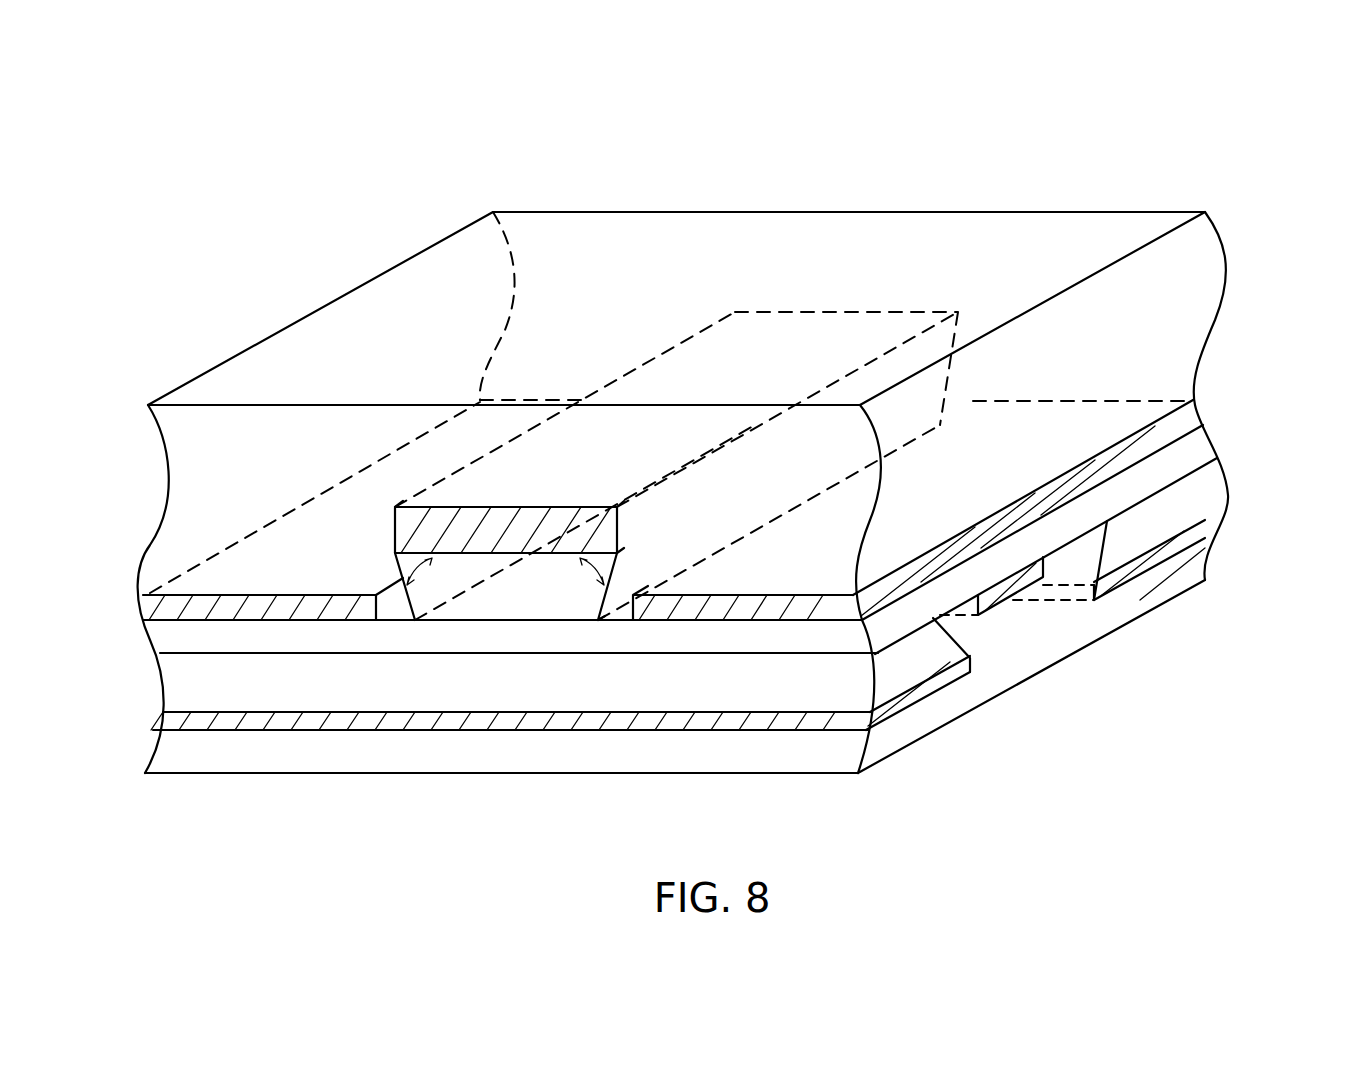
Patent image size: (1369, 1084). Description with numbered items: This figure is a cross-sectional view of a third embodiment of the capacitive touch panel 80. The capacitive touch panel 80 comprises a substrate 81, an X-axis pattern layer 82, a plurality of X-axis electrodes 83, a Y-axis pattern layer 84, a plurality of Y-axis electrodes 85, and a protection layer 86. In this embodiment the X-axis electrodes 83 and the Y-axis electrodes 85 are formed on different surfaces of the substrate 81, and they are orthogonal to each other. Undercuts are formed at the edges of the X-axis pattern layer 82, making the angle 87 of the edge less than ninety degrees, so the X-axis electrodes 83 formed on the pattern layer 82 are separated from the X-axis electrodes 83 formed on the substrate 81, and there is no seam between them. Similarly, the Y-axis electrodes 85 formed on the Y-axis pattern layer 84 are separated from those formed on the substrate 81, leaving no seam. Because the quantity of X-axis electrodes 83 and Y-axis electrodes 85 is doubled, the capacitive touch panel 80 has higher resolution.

The capacitive touch panel 80 is at (1226, 148).
The substrate 81 is at (330, 645).
The X-axis pattern layer 82 is at (575, 603).
The X-axis electrodes 83 is at (542, 540).
The Y-axis pattern layer 84 is at (332, 680).
The Y-axis electrodes 85 is at (405, 735).
The protection layer 86 is at (217, 486).
The angle 87 is at (403, 575).